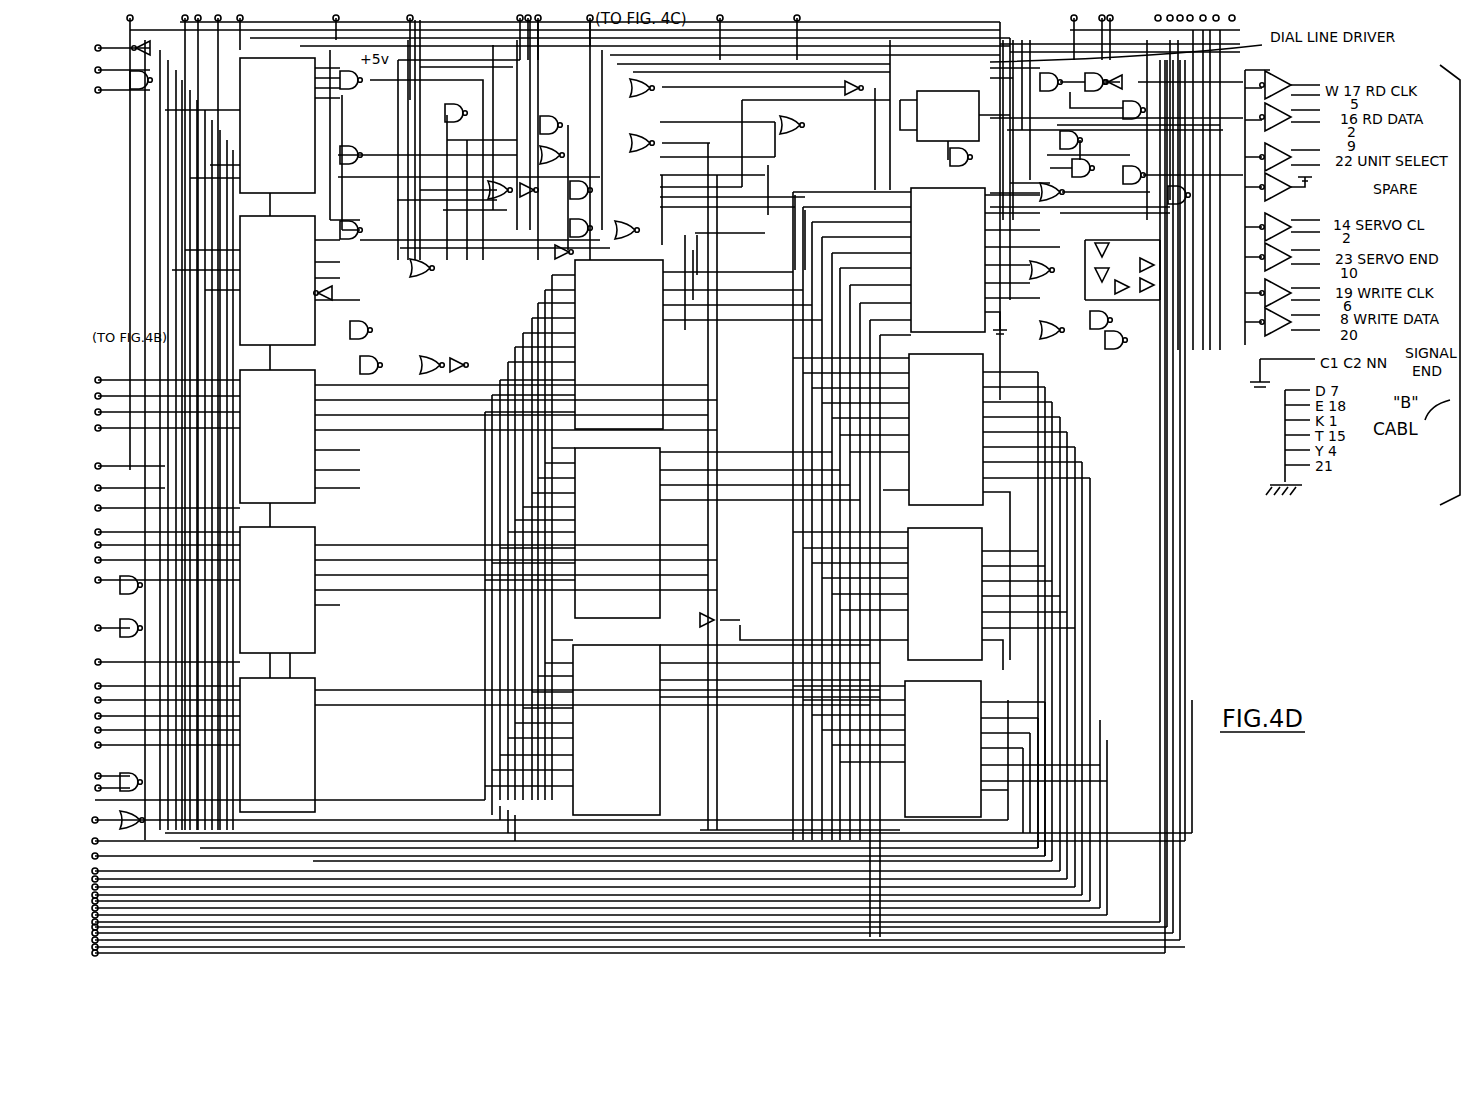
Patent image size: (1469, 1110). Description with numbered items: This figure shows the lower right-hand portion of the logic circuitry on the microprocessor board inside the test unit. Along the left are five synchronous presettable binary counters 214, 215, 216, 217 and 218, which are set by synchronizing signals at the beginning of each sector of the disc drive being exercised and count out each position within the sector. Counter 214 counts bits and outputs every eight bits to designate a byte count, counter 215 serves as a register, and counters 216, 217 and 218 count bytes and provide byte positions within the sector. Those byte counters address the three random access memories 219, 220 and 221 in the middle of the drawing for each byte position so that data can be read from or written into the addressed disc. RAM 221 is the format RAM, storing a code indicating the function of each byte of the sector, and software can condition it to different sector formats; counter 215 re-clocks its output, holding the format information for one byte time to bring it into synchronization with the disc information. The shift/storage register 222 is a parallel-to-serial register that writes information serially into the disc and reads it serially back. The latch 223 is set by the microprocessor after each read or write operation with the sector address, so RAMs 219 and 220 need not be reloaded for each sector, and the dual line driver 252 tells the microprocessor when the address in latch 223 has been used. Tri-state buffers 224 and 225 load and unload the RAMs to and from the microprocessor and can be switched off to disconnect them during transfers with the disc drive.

The synchronous presettable binary counter 214 is at (270, 152).
The synchronous presettable binary counter 215 is at (270, 236).
The synchronous presettable binary counter 216 is at (268, 382).
The synchronous presettable binary counter 217 is at (300, 610).
The synchronous presettable binary counter 218 is at (300, 725).
The random access memory 219 is at (652, 322).
The random access memory 220 is at (650, 565).
The random access memory 221 is at (583, 805).
The 8-input universal shift/storage register 222 is at (930, 205).
The latch 223 is at (962, 402).
The hexagonal three-state buffer 224 is at (920, 632).
The hexagonal three-state buffer 225 is at (905, 805).
The dual line driver 252 is at (935, 98).